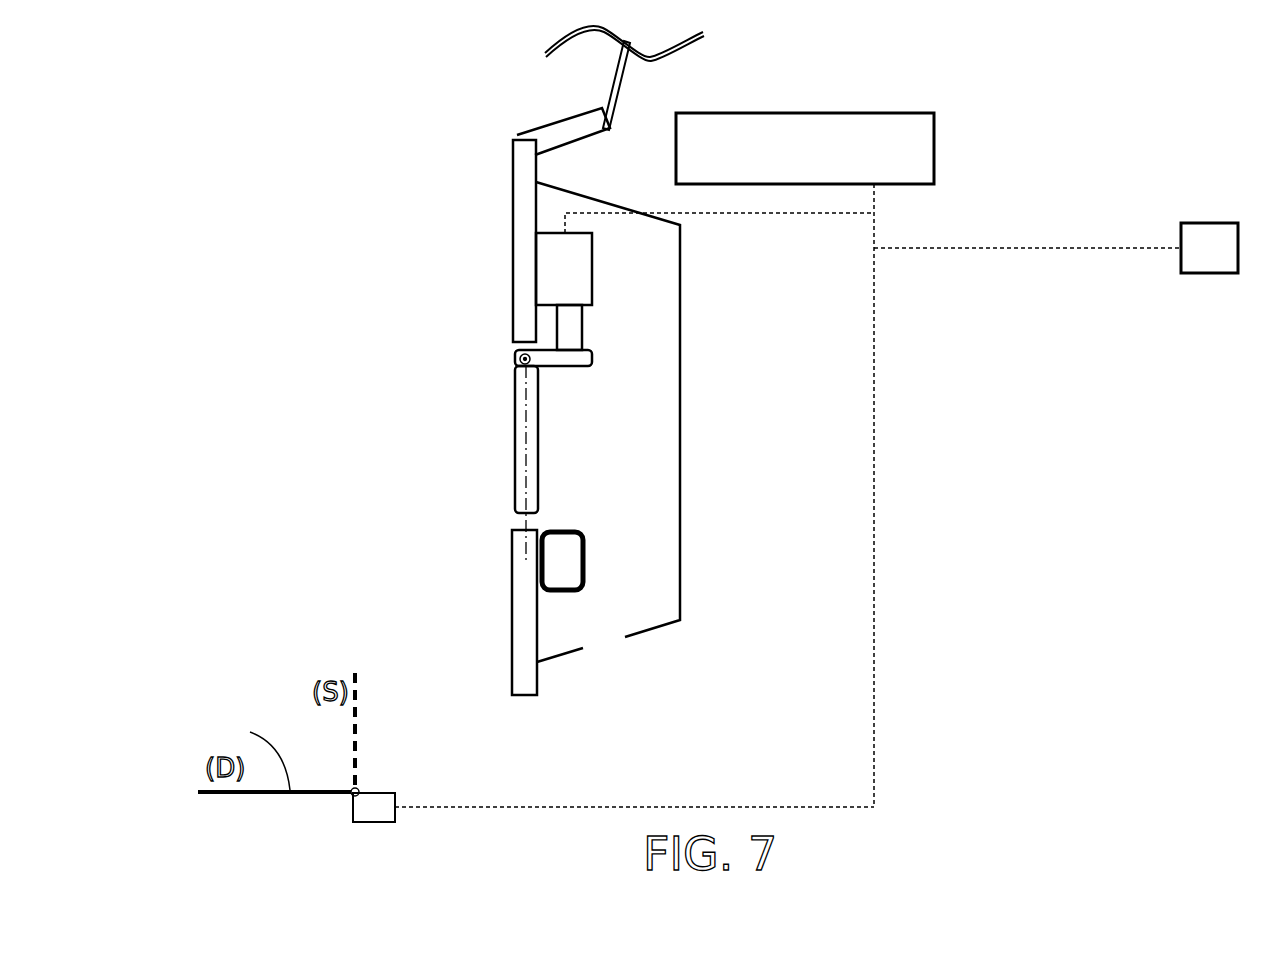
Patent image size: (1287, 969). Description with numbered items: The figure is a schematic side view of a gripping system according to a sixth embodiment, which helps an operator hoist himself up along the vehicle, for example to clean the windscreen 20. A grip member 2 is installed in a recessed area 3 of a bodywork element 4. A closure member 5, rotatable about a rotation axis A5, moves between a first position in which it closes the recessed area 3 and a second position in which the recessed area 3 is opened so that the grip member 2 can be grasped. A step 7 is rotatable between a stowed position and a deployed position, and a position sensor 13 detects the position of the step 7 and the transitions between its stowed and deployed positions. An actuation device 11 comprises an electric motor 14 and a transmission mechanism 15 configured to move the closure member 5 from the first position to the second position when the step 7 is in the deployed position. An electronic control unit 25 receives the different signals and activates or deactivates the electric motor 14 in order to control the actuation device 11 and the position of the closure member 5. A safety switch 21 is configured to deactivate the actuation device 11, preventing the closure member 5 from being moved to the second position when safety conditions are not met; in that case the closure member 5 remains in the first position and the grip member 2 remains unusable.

The windscreen 20 is at (612, 74).
The electronic control unit 25 is at (870, 148).
The electric motor 14 is at (592, 268).
The actuation device 11 is at (648, 300).
The transmission mechanism 15 is at (570, 327).
The safety switch 21 is at (1208, 252).
The rotation axis A5 is at (520, 360).
The closure member 5 is at (522, 438).
The recessed area 3 is at (643, 520).
The grip member 2 is at (563, 573).
The bodywork element 4 is at (525, 635).
The step 7 is at (262, 751).
The position sensor 13 is at (372, 807).